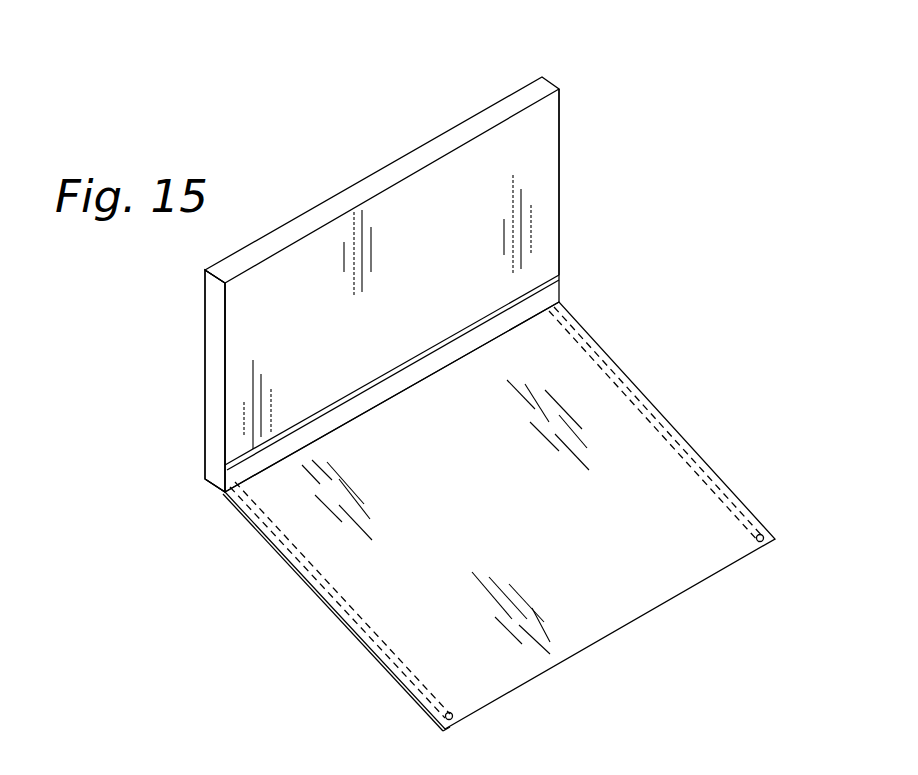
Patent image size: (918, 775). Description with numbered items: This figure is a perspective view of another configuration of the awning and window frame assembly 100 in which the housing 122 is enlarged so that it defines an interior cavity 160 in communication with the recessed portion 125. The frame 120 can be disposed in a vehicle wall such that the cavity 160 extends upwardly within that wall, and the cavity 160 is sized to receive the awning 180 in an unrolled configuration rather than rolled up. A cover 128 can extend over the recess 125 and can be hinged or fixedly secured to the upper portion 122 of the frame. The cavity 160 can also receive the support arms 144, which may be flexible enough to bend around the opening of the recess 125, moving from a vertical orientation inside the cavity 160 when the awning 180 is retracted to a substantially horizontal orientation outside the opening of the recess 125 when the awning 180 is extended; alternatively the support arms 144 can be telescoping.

The awning and window frame assembly 100 is at (661, 57).
The frame 120 is at (388, 172).
The upper portion 122 is at (558, 158).
The recessed portion 125 is at (213, 462).
The cover 128 is at (548, 293).
The support arms 144 is at (652, 397).
The interior cavity 160 is at (208, 355).
The awning 180 is at (683, 503).